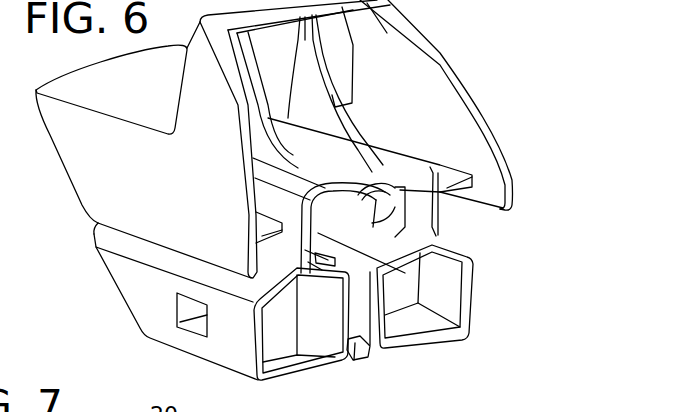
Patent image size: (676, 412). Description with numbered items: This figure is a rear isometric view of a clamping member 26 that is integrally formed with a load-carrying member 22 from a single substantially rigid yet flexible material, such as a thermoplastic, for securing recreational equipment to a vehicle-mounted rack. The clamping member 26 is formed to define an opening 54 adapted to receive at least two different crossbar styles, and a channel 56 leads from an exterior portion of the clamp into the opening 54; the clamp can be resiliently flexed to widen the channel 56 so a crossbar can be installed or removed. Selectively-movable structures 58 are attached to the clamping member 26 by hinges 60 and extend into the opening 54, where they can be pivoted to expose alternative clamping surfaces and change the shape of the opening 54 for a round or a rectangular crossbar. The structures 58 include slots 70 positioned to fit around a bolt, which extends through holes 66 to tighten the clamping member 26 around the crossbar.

The load-carrying member 22 is at (85, 145).
The clamping member 26 is at (490, 260).
The opening 54 is at (345, 216).
The channel 56 is at (353, 362).
The selectively-movable structures 58 is at (322, 213).
The hinges 60 is at (313, 272).
The holes 66 is at (193, 328).
The slots 70 is at (362, 185).